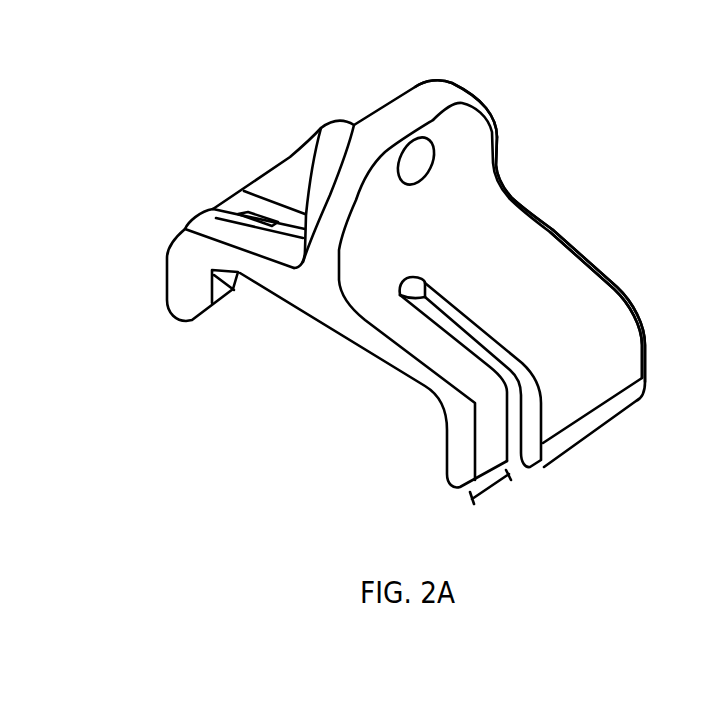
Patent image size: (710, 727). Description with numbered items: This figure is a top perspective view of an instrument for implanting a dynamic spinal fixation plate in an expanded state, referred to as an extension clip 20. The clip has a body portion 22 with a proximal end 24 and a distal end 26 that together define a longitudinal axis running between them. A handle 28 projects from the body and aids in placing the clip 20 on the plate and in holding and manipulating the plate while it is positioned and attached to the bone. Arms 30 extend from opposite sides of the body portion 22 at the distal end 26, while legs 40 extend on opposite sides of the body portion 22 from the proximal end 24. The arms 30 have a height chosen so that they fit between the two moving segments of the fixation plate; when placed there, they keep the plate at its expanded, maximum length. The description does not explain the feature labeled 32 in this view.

The extension clip 20 is at (202, 445).
The body portion 22 is at (477, 147).
The proximal end 24 is at (503, 202).
The distal end 26 is at (332, 310).
The handle 28 is at (423, 95).
The arms 30 is at (207, 215).
The slot between legs 32 is at (457, 372).
The legs 40 is at (323, 130).